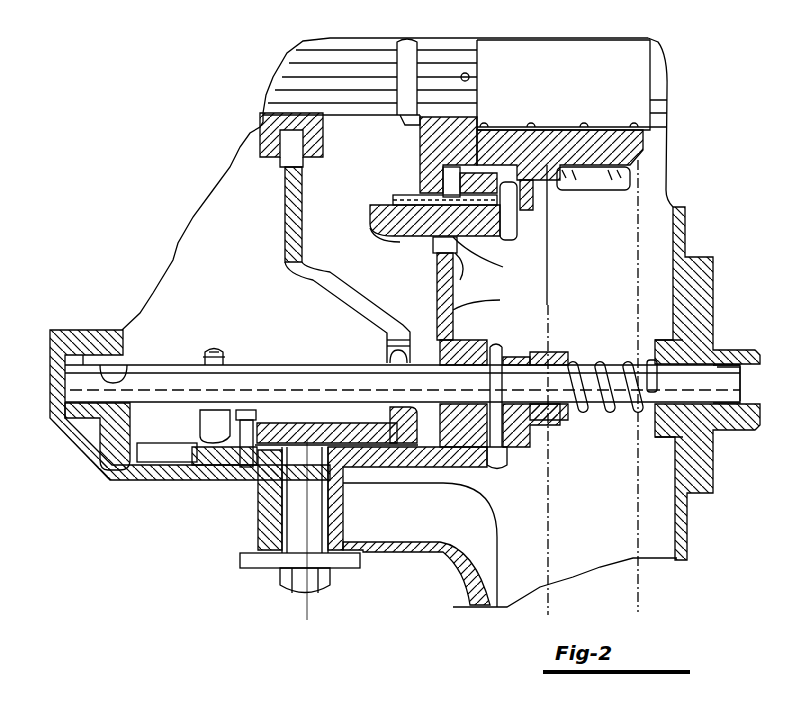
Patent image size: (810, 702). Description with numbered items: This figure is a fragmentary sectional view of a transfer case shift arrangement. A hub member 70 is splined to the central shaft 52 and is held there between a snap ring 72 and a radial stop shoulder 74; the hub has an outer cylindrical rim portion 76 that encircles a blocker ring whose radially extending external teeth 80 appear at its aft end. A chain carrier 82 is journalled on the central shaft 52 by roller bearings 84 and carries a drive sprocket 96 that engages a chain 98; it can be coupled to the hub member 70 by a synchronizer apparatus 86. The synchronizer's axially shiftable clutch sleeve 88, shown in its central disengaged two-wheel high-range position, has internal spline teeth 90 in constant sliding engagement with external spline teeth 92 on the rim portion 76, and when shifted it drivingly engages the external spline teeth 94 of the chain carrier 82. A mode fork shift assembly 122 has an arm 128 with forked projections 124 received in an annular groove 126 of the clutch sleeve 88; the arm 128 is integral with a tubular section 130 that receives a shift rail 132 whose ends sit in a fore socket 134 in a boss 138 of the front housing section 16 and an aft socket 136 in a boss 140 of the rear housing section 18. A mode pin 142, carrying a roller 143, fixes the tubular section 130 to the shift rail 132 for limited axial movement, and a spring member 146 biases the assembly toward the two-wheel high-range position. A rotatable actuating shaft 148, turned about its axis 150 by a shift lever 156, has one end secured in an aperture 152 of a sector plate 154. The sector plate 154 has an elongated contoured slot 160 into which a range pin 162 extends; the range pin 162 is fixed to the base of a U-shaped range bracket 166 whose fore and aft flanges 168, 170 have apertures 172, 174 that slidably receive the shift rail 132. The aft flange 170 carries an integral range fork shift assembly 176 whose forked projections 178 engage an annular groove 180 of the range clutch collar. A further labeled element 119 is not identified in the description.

The front housing section 16 is at (155, 473).
The rear housing section 18 is at (700, 260).
The central shaft 52 is at (410, 58).
The hub member 70 is at (435, 150).
The snap ring 72 is at (415, 120).
The radial stop shoulder 74 is at (472, 79).
The outer cylindrical rim portion 76 is at (412, 185).
The external teeth 80 is at (497, 198).
The chain carrier 82 is at (583, 152).
The roller bearings 84 is at (520, 125).
The synchronizer apparatus 86 is at (352, 200).
The clutch sleeve 88 is at (405, 238).
The internal spline teeth 90 is at (400, 236).
The external spline teeth 92 is at (507, 238).
The external spline teeth 94 is at (540, 203).
The drive sprocket 96 is at (597, 182).
The chain 98 is at (517, 282).
The fork lever 119 is at (485, 176).
The mode fork shift assembly 122 is at (487, 320).
The forked projections 124 is at (433, 255).
The annular groove 126 is at (525, 258).
The arm 128 is at (453, 310).
The tubular section 130 is at (550, 350).
The shift rail 132 is at (600, 412).
The fore socket 134 is at (130, 366).
The aft socket 136 is at (707, 360).
The boss 138 is at (87, 362).
The boss 140 is at (730, 350).
The mode pin 142 is at (520, 350).
The roller 143 is at (500, 470).
The spring member 146 is at (603, 377).
The actuating shaft 148 is at (312, 513).
The axis 150 is at (307, 613).
The aperture 152 is at (233, 480).
The sector plate 154 is at (193, 473).
The shift lever 156 is at (350, 560).
The elongated contoured slot 160 is at (243, 483).
The range pin 162 is at (247, 440).
The range bracket 166 is at (193, 437).
The fore flange 168 is at (213, 350).
The aft flange 170 is at (390, 350).
The aperture 172 is at (226, 363).
The aperture 174 is at (378, 365).
The range fork shift assembly 176 is at (322, 303).
The forked projections 178 is at (307, 162).
The annular groove 180 is at (285, 168).